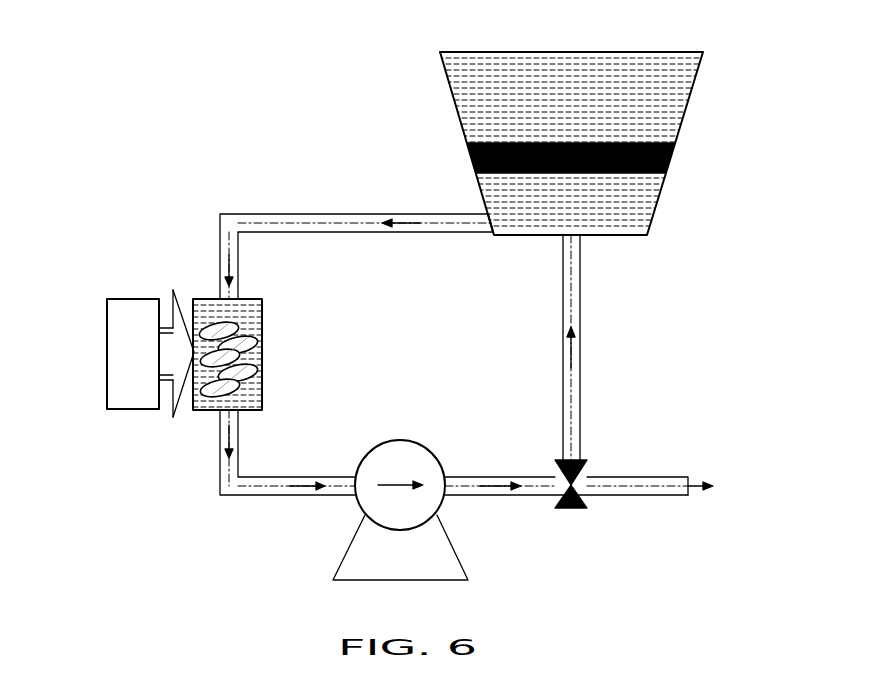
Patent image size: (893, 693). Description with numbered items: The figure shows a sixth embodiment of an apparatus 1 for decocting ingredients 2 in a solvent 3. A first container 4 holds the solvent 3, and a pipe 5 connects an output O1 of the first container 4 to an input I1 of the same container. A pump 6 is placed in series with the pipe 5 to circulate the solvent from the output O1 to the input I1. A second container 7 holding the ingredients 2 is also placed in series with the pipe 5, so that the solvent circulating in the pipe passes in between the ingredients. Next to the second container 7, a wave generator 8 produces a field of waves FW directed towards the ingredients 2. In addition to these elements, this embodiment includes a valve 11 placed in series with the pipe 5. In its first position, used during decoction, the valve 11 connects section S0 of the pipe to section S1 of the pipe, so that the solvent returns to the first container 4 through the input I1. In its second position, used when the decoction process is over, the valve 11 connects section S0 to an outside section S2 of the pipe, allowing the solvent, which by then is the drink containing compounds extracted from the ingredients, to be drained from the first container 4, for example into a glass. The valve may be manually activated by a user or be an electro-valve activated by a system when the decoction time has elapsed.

The apparatus 1 is at (238, 90).
The ingredients 2 is at (250, 369).
The solvent 3 is at (677, 77).
The first container 4 is at (446, 72).
The pipe 5 is at (255, 213).
The pump 6 is at (400, 440).
The second container 7 is at (205, 412).
The wave generator 8 is at (107, 351).
The valve 11 is at (584, 465).
The field of waves FW is at (173, 310).
The output of the first container O1 is at (490, 213).
The input of the first container I1 is at (580, 238).
The section S0 of the pipe S0 is at (566, 502).
The section S1 of the pipe S1 is at (590, 347).
The outside section S2 of the pipe S2 is at (650, 502).